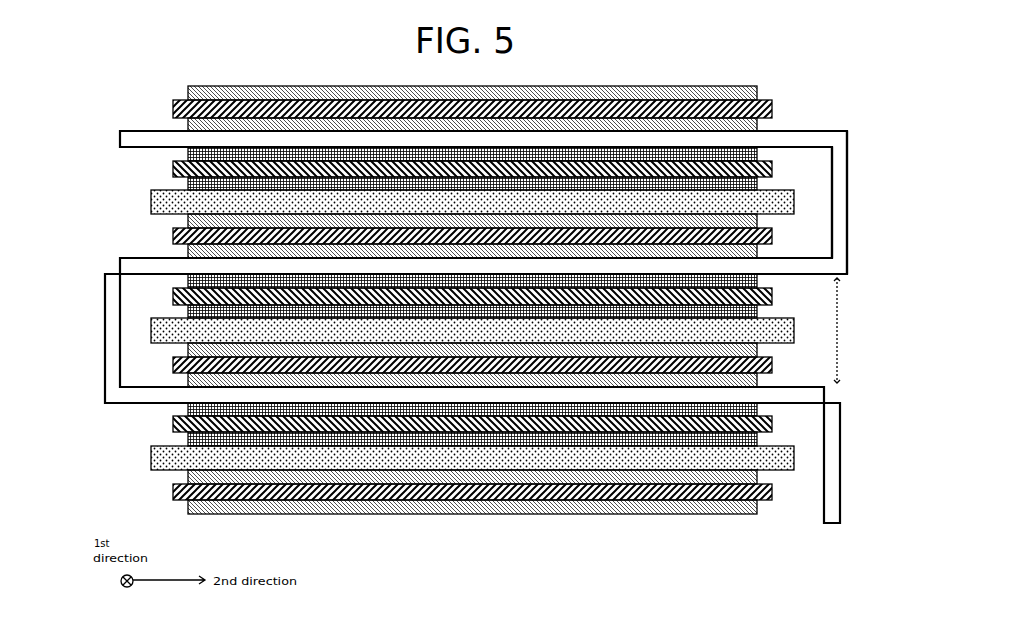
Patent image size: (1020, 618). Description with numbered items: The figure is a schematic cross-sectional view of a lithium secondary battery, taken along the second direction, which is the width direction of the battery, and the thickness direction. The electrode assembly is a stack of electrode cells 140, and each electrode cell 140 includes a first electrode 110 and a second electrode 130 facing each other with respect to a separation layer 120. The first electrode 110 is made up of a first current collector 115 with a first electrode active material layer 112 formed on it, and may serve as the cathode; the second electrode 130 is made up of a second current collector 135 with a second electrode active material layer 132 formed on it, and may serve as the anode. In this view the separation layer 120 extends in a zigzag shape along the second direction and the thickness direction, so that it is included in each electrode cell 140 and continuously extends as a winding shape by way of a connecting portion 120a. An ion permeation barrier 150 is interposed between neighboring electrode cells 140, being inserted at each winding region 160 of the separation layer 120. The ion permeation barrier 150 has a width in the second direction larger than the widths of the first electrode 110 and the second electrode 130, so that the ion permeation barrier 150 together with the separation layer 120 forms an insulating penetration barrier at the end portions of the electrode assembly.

The first electrode 110 is at (99, 83).
The first electrode active material layer 112 is at (187, 93).
The first current collector 115 is at (172, 109).
The separation layer 120 is at (120, 140).
The connecting portion 120a is at (845, 205).
The second electrode 130 is at (99, 145).
The second electrode active material layer 132 is at (187, 156).
The second current collector 135 is at (172, 172).
The electrode cell 140 is at (63, 172).
The ion permeation barrier 150 is at (150, 212).
The winding region 160 is at (841, 331).